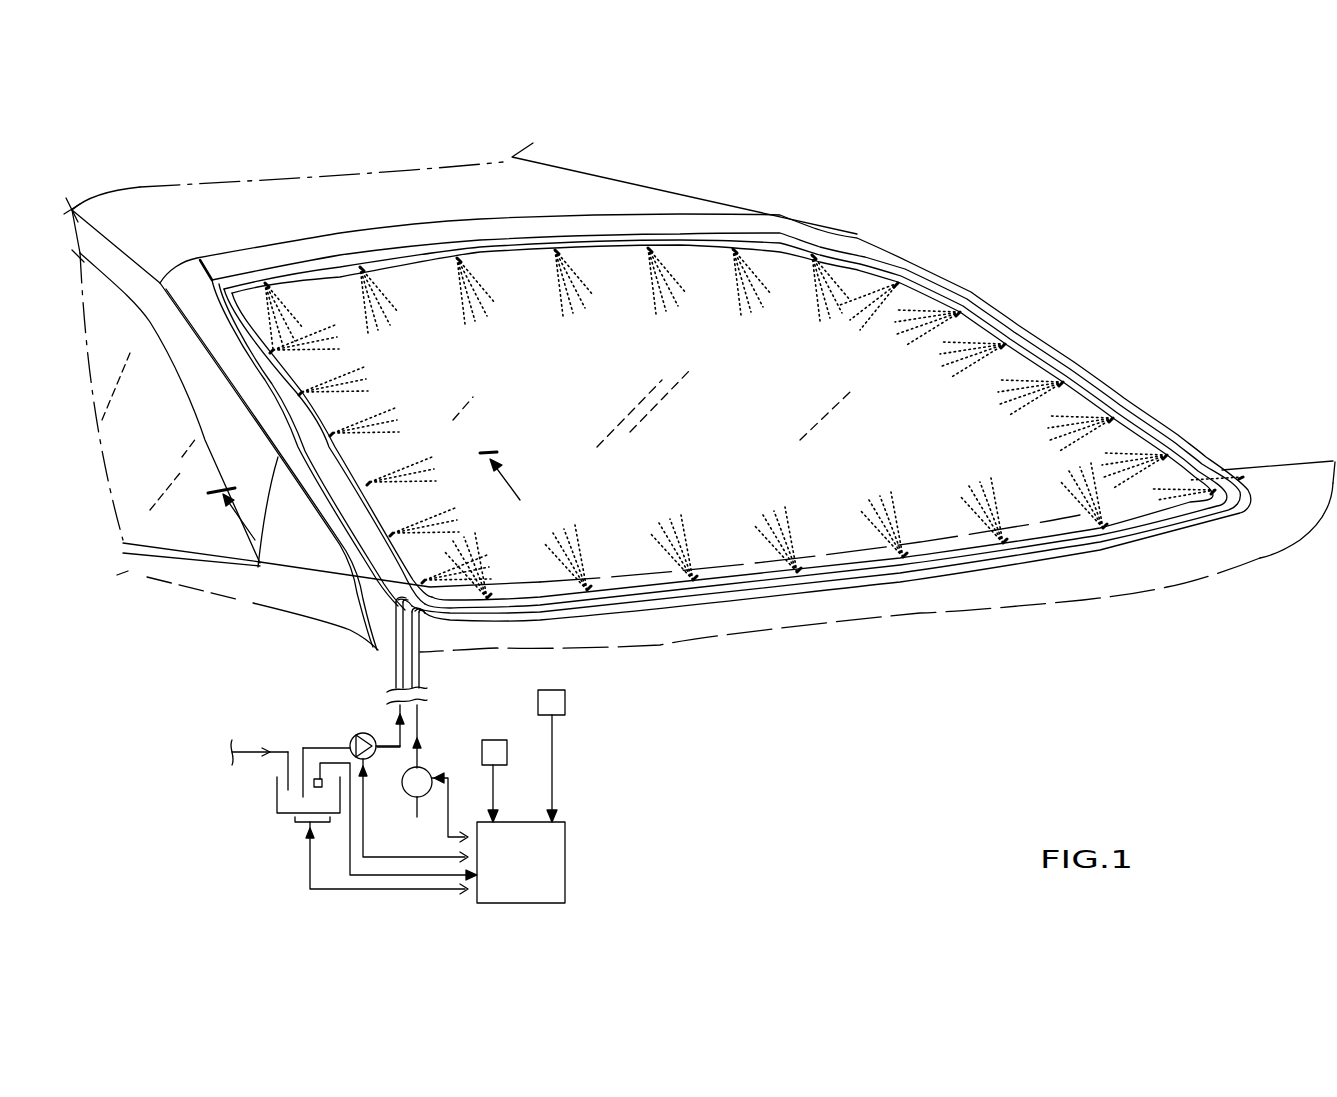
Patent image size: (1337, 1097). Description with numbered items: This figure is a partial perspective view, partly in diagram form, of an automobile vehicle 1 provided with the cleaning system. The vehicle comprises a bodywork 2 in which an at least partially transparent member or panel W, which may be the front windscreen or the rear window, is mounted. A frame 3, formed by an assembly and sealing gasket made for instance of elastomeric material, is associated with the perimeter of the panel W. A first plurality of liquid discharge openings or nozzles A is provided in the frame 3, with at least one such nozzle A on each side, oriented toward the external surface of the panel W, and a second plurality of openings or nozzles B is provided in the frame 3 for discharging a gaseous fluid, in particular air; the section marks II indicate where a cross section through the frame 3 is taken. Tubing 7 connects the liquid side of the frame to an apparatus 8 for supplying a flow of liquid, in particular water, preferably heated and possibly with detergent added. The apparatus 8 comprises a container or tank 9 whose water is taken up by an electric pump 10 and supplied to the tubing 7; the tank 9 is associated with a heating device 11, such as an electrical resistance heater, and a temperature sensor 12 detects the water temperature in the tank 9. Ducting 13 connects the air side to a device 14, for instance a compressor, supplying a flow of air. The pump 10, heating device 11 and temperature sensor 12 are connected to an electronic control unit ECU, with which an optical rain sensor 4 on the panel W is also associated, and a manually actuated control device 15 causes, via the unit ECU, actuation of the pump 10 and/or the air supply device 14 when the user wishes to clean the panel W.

The automobile vehicle 1 is at (1087, 288).
The bodywork 2 is at (582, 190).
The frame 3 is at (702, 399).
The rain sensor 4 is at (553, 700).
The tubing 7 is at (395, 662).
The apparatus for the supply of a flow of liquid 8 is at (336, 723).
The container or tank 9 is at (275, 792).
The electric pump 10 is at (363, 732).
The heating device 11 is at (295, 820).
The temperature sensor 12 is at (323, 792).
The ducting 13 is at (420, 668).
The device supplying a flow of gaseous fluid 14 is at (413, 783).
The control device 15 is at (493, 757).
The liquid discharge openings or nozzles A is at (360, 267).
The gaseous fluid discharge openings or nozzles B is at (265, 283).
The member or panel W is at (815, 365).
The section line II is at (371, 502).
The electronic control unit ECU is at (550, 860).